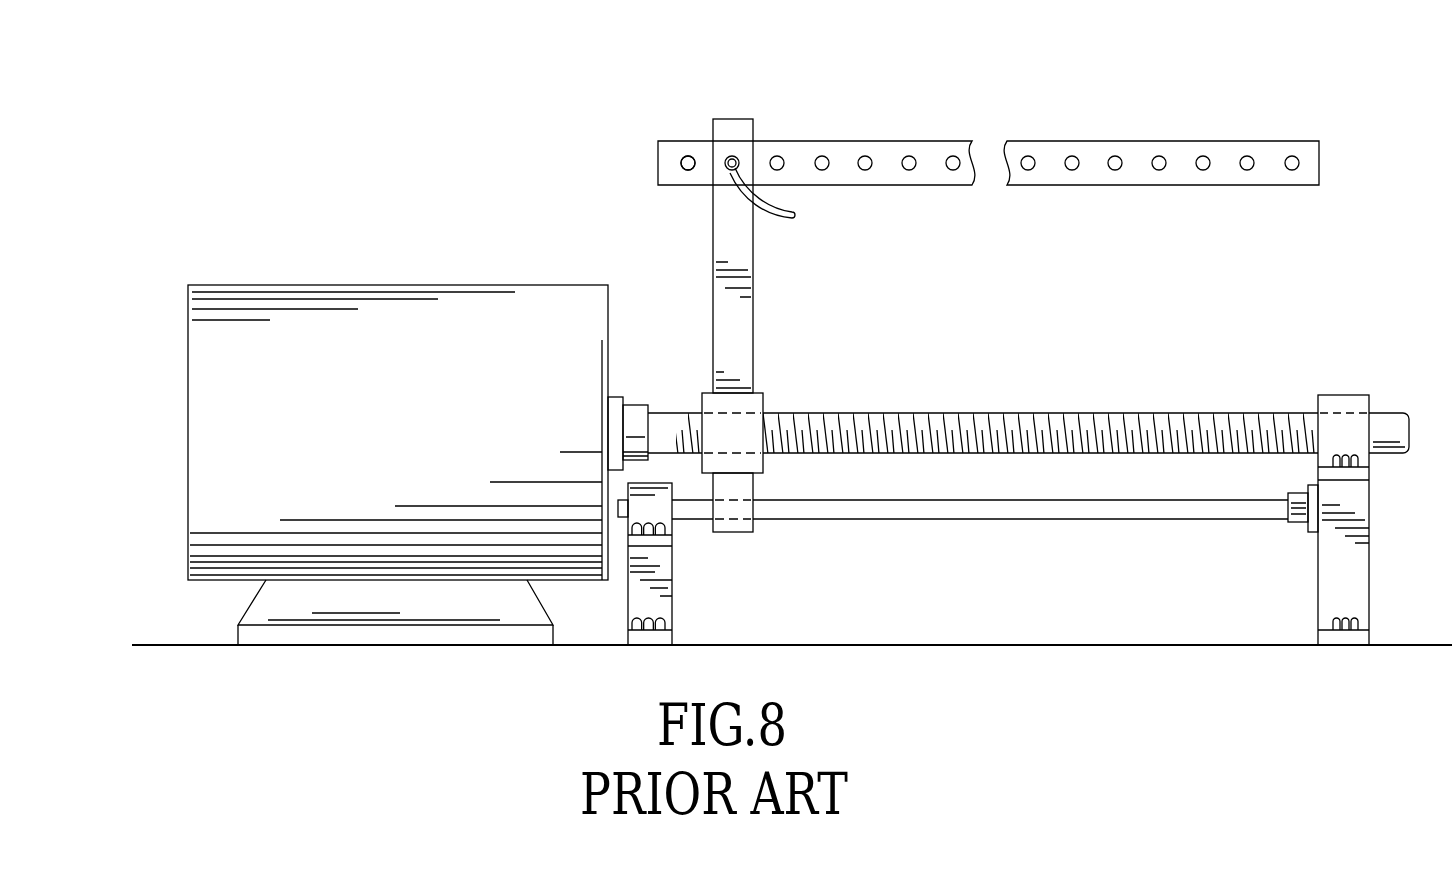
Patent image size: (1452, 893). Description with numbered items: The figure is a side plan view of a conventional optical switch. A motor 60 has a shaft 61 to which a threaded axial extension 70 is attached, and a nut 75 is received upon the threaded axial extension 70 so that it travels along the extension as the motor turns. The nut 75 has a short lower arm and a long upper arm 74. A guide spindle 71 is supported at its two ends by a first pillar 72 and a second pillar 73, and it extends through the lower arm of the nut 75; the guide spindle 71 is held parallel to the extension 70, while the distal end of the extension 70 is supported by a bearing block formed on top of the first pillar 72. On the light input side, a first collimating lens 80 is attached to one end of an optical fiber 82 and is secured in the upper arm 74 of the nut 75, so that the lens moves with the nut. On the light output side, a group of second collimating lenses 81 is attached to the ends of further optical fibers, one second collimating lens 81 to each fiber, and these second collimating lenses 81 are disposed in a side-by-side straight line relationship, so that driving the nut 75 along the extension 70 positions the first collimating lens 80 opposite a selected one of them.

The motor 60 is at (417, 292).
The shaft 61 is at (633, 408).
The threaded axial extension 70 is at (961, 415).
The guide spindle 71 is at (1018, 515).
The first pillar 72 is at (1368, 575).
The second pillar 73 is at (668, 588).
The upper arm 74 is at (745, 336).
The nut 75 is at (762, 402).
The first collimating lens 80 is at (730, 157).
The second collimating lens 81 is at (688, 156).
The optical fiber 82 is at (779, 213).